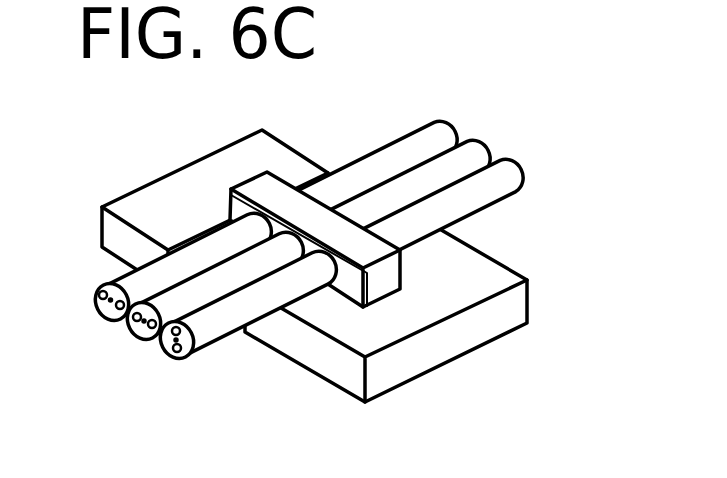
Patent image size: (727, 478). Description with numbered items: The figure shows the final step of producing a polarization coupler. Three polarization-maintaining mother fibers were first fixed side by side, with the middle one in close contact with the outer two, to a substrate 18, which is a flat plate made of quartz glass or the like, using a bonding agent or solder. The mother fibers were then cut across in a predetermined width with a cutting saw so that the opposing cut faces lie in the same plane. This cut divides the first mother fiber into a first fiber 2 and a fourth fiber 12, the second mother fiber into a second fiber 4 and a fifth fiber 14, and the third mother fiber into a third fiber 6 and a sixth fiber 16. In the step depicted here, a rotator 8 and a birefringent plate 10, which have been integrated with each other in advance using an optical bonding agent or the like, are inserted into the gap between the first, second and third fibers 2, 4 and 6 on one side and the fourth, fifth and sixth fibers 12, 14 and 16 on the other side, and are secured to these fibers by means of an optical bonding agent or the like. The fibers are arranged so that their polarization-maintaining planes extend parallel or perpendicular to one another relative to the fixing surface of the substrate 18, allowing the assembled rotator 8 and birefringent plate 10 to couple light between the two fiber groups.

The first fiber 2 is at (213, 330).
The second fiber 4 is at (165, 305).
The third fiber 6 is at (127, 280).
The rotator 8 is at (231, 207).
The birefringent plate 10 is at (273, 187).
The fourth fiber 12 is at (510, 178).
The fifth fiber 14 is at (477, 158).
The sixth fiber 16 is at (423, 137).
The substrate 18 is at (510, 272).